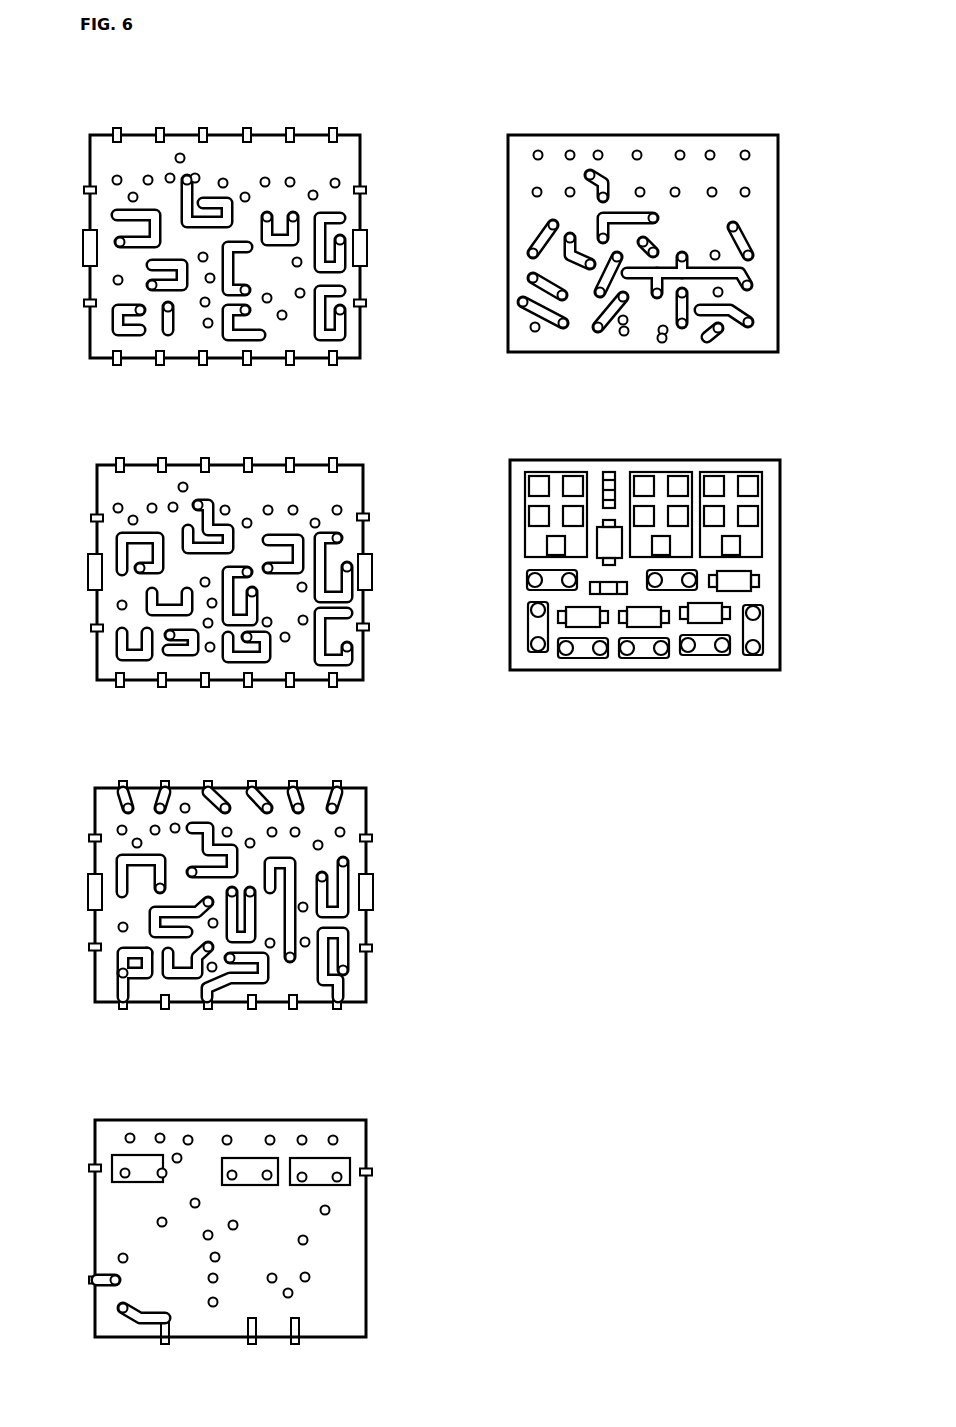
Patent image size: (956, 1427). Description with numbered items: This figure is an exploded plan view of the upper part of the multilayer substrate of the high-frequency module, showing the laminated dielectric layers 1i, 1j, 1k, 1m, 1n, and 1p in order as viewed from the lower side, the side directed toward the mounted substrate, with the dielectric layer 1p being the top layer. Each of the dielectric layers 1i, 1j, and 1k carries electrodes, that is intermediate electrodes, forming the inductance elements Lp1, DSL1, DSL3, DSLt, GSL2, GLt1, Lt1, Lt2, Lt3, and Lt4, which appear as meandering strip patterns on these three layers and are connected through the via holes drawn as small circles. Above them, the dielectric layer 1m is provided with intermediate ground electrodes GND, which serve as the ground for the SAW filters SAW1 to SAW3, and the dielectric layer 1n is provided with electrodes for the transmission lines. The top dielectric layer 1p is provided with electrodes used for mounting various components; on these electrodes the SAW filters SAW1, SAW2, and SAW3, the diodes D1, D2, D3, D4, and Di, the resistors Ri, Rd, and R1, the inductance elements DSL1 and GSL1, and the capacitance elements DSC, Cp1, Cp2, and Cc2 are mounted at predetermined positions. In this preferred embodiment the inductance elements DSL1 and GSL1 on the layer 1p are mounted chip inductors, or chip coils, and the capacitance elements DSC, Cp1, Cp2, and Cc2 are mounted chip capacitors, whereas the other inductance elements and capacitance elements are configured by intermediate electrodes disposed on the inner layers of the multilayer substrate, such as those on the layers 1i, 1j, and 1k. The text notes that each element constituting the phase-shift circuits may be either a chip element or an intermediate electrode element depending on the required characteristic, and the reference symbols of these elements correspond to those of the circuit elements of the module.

The dielectric layer 1i is at (90, 140).
The dielectric layer 1j is at (97, 470).
The dielectric layer 1k is at (95, 792).
The dielectric layer 1m is at (95, 1125).
The dielectric layer 1n is at (510, 142).
The top dielectric layer 1p is at (515, 470).
The inductance element DSL3 is at (187, 178).
The inductance element Lt2 is at (267, 215).
The inductance element Lp1 is at (117, 215).
The inductance element GSL2 is at (340, 224).
The inductance element DSL1 is at (577, 642).
The inductance element Lt4 is at (118, 320).
The inductance element Lt1 is at (340, 327).
The inductance element GLt1 is at (230, 335).
The inductance element DSLt is at (240, 292).
The inductance element Lt3 is at (172, 652).
The resistor Ri is at (612, 490).
The SAW filter SAW3 is at (660, 480).
The SAW filter SAW2 is at (540, 503).
The SAW filter SAW1 is at (750, 492).
The diode Di is at (598, 533).
The capacitance element DSC is at (695, 573).
The capacitance element Cp2 is at (532, 582).
The diode D2 is at (732, 575).
The capacitance element Cp1 is at (588, 590).
The diode D1 is at (705, 612).
The diode D4 is at (578, 612).
The capacitance element Cc2 is at (764, 640).
The resistor Rd is at (538, 628).
The resistor R1 is at (647, 623).
The diode D3 is at (668, 652).
The inductance element GSL1 is at (708, 643).
The intermediate ground electrode GND is at (140, 1160).